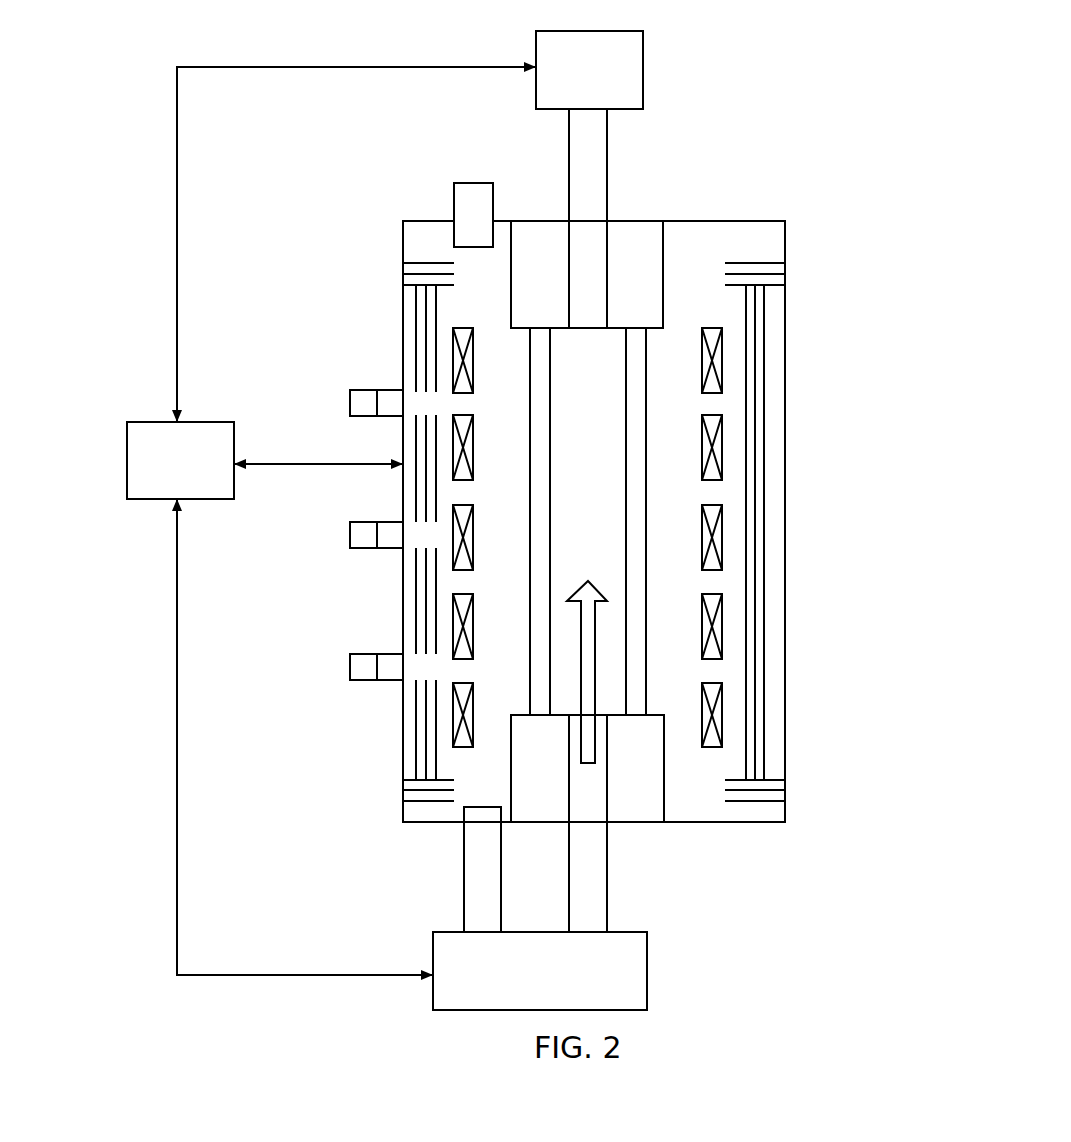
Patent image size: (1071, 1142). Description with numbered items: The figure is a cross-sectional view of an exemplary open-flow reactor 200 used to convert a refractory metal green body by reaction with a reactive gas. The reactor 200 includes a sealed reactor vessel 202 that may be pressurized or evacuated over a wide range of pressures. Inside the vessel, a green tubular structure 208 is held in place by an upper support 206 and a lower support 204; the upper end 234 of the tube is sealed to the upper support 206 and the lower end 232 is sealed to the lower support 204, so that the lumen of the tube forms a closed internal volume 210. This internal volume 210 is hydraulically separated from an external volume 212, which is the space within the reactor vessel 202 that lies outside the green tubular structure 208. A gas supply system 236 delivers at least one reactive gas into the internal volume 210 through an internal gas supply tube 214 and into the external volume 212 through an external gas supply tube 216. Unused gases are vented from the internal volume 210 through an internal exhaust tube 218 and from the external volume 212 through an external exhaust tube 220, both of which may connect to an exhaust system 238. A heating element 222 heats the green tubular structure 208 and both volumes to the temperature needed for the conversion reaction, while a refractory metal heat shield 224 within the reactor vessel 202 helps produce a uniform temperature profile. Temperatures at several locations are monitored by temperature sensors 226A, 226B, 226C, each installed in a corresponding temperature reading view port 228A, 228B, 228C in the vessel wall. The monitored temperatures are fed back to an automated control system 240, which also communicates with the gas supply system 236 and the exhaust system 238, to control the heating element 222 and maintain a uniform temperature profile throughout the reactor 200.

The open-flow reactor 200 is at (752, 152).
The reactor vessel 202 is at (432, 220).
The lower support 204 is at (647, 757).
The upper support 206 is at (660, 302).
The green tubular structure 208 is at (637, 588).
The internal volume 210 is at (605, 497).
The external volume 212 is at (673, 411).
The internal gas supply tube 214 is at (607, 862).
The external gas supply tube 216 is at (464, 838).
The internal exhaust tube 218 is at (607, 178).
The external exhaust tube 220 is at (472, 183).
The heating element 222 is at (452, 362).
The refractory metal heat shield 224 is at (754, 692).
The temperature sensor 226A is at (390, 390).
The temperature sensor 226B is at (390, 522).
The temperature sensor 226C is at (390, 654).
The temperature reading view port 228A is at (362, 417).
The temperature reading view port 228B is at (362, 549).
The temperature reading view port 228C is at (362, 680).
The lower end 232 is at (540, 707).
The upper end 234 is at (538, 335).
The gas supply system 236 is at (432, 948).
The exhaust system 238 is at (643, 65).
The automated control system 240 is at (128, 470).